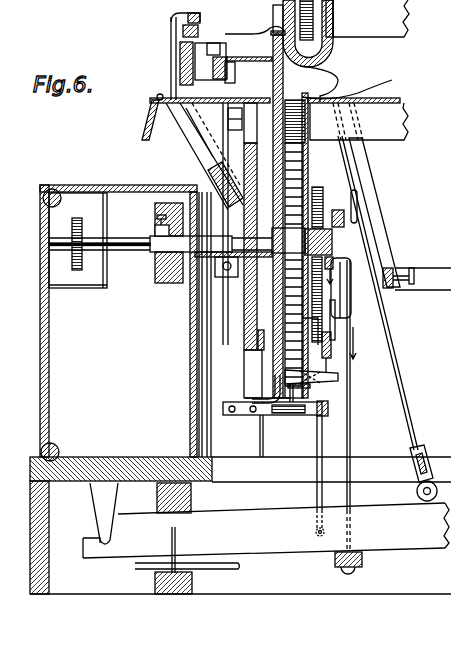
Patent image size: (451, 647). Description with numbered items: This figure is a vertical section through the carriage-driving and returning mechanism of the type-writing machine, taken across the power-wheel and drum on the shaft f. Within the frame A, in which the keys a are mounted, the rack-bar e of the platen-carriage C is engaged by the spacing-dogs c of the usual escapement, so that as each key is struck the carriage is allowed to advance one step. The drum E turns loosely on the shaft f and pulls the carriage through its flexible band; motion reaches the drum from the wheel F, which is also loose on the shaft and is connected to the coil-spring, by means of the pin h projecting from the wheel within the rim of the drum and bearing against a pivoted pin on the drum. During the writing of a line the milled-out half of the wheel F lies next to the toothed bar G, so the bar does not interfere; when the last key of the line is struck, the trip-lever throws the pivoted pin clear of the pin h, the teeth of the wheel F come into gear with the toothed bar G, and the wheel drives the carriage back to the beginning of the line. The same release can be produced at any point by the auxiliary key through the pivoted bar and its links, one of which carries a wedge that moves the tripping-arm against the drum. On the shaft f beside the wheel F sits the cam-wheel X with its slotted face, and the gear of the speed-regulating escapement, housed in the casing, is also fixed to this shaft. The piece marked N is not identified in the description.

The frame A is at (150, 449).
The keys a is at (248, 17).
The platen-carriage C is at (371, 18).
The dogs c is at (221, 179).
The drum E is at (310, 150).
The rack-bar e is at (180, 70).
The wheel F is at (272, 88).
The shaft f is at (135, 238).
The toothed bar G is at (327, 84).
The pin h is at (273, 381).
The nut N is at (240, 121).
The cam-wheel X is at (237, 356).